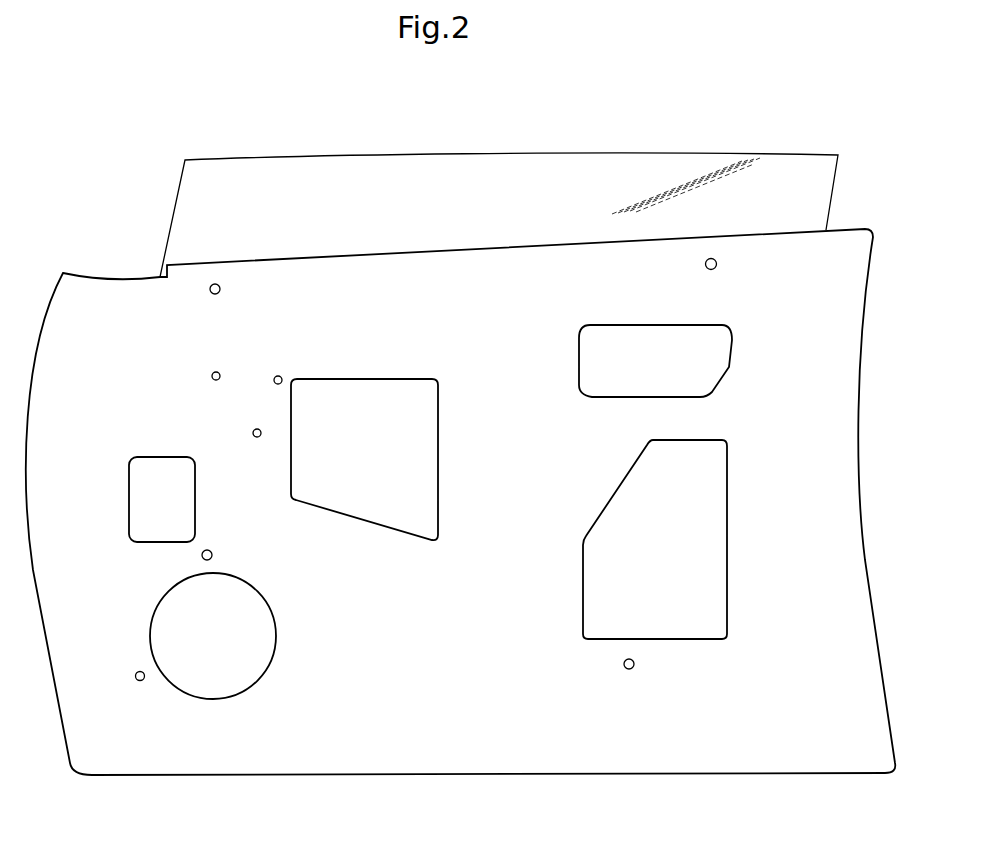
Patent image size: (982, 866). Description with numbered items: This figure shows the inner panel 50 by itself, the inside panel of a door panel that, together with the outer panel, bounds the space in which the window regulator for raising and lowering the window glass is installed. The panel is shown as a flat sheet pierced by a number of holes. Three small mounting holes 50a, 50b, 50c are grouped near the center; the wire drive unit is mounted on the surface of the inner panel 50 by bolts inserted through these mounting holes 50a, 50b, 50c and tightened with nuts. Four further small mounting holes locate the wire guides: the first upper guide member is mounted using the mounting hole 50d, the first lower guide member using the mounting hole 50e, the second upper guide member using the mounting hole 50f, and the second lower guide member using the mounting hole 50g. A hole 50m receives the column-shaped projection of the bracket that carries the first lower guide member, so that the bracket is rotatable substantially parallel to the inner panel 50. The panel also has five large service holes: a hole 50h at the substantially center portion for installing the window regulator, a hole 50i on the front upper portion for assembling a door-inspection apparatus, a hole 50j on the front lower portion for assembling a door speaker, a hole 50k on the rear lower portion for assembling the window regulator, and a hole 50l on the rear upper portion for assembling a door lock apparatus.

The inner panel 50 is at (145, 293).
The mounting hole 50a is at (281, 376).
The mounting hole 50b is at (257, 437).
The mounting hole 50c is at (219, 372).
The mounting hole 50d is at (219, 284).
The mounting hole 50e is at (142, 681).
The mounting hole 50f is at (717, 262).
The mounting hole 50g is at (634, 667).
The hole 50h is at (440, 424).
The hole 50i is at (195, 497).
The hole 50j is at (272, 603).
The hole 50k is at (728, 477).
The hole 50l is at (734, 347).
The hole 50m is at (211, 551).